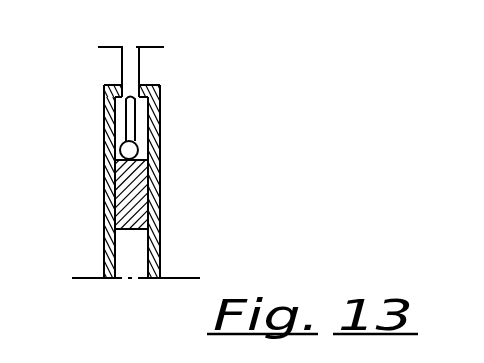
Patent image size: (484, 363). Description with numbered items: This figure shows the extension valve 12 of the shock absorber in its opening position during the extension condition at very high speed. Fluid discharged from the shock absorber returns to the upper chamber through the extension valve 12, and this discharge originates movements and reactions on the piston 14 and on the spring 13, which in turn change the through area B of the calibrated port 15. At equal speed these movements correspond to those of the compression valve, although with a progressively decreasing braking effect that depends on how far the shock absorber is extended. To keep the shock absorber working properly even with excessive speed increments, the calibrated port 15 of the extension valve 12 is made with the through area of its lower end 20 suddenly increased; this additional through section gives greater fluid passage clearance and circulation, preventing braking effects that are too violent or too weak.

The extension valve 12 is at (153, 201).
The spring 13 is at (132, 258).
The piston 14 is at (123, 199).
The calibrated port 15 is at (145, 110).
The lower end 20 is at (136, 146).
The through area B is at (123, 130).